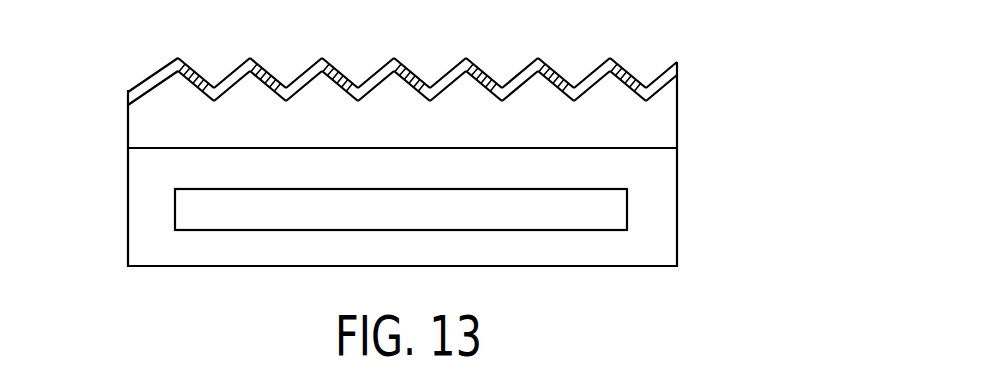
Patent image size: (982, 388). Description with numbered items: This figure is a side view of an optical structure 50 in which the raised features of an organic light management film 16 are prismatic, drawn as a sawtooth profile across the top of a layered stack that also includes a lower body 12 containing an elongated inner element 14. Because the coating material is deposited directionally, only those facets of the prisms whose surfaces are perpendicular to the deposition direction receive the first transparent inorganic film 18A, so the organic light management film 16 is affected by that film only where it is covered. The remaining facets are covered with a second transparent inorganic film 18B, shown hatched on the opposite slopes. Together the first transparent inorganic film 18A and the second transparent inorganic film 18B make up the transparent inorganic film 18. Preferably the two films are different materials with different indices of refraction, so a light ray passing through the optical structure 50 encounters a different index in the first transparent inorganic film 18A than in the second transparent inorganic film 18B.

The optical structure 50 is at (788, 160).
The substrate 12 is at (665, 217).
The embedded element 14 is at (537, 220).
The organic light management film 16 is at (662, 131).
The transparent inorganic film 18 is at (391, 82).
The first transparent inorganic film 18A is at (679, 72).
The second transparent inorganic film 18B is at (625, 70).